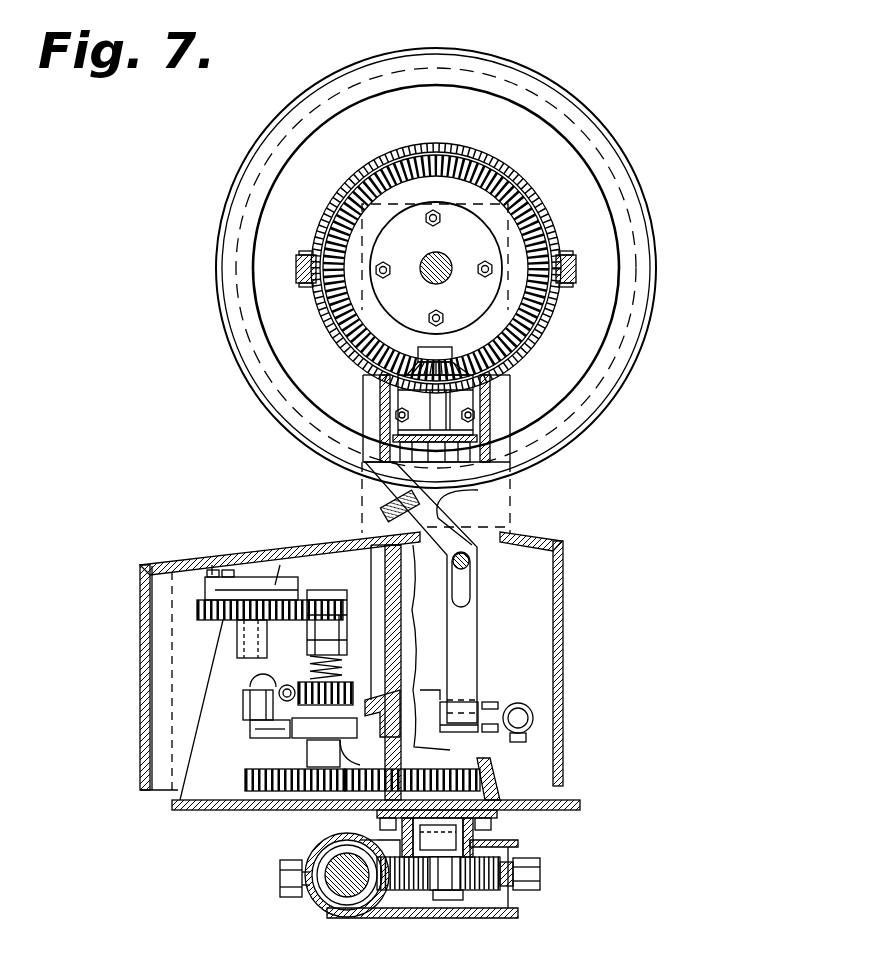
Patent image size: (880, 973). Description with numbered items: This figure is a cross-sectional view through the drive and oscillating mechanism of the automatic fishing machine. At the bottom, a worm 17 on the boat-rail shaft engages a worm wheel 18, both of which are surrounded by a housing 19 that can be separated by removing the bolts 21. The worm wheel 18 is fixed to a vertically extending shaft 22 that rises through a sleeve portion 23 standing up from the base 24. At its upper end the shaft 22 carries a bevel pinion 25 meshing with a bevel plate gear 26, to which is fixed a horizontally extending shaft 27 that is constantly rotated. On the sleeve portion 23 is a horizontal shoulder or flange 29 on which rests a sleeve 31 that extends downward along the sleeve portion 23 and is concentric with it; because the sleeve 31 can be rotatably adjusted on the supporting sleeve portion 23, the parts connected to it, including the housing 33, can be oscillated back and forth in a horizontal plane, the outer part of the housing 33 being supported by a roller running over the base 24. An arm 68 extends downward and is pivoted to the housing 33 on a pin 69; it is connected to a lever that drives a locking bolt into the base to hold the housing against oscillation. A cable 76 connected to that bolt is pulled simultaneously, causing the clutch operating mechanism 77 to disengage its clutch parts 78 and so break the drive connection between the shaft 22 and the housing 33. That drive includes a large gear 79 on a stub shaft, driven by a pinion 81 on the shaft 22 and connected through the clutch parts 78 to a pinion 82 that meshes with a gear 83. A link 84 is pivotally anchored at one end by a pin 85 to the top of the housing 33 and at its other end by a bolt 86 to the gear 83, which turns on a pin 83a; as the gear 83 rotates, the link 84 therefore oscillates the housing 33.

The worm 17 is at (342, 900).
The worm wheel 18 is at (478, 890).
The housing 19 is at (520, 908).
The bolts 21 is at (540, 866).
The vertically extending shaft 22 is at (497, 745).
The sleeve portion 23 is at (502, 774).
The base 24 is at (575, 800).
The bevel pinion 25 is at (508, 378).
The bevel plate gear 26 is at (545, 240).
The horizontally extending shaft 27 is at (430, 278).
The shoulder or flange 29 is at (418, 698).
The sleeve 31 is at (387, 618).
The housing 33 is at (140, 692).
The arm 68 is at (470, 623).
The pin 69 is at (472, 560).
The cable 76 is at (262, 792).
The clutch operating mechanism 77 is at (258, 722).
The clutch parts 78 is at (290, 792).
The large gear 79 is at (352, 768).
The pinion 81 is at (498, 820).
The pinion 82 is at (343, 600).
The gear 83 is at (212, 620).
The pin 83a is at (274, 639).
The link 84 is at (286, 586).
The pin 85 is at (303, 560).
The bolt 86 is at (214, 560).